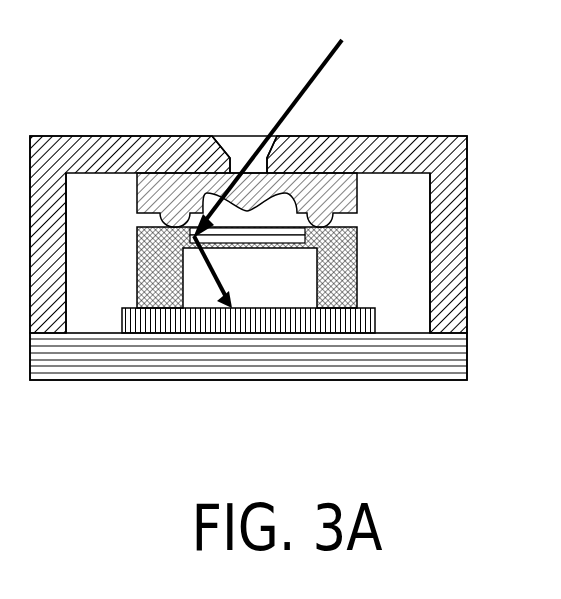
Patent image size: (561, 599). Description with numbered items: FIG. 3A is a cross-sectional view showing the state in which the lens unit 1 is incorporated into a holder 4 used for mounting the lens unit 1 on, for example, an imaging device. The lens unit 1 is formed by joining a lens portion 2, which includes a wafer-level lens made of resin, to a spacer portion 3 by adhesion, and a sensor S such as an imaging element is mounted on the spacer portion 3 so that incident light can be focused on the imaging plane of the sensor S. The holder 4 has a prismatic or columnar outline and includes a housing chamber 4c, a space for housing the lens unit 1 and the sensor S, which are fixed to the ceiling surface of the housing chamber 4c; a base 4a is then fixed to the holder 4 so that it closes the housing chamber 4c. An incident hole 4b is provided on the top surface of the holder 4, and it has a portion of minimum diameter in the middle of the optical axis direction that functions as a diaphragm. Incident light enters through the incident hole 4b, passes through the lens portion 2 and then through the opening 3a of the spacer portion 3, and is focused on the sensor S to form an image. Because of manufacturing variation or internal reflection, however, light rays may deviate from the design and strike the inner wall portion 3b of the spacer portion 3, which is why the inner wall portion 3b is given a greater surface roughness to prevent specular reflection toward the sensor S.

The lens unit 1 is at (368, 273).
The lens portion 2 is at (137, 195).
The spacer portion 3 is at (137, 272).
The opening 3a is at (238, 235).
The inner wall portion 3b is at (310, 232).
The holder 4 is at (467, 213).
The base 4a is at (467, 362).
The incident hole 4b is at (236, 136).
The housing chamber 4c is at (418, 312).
The sensor S is at (122, 318).